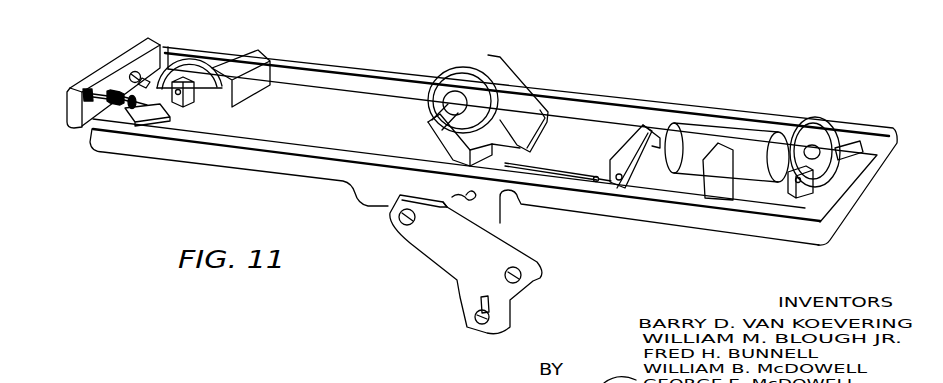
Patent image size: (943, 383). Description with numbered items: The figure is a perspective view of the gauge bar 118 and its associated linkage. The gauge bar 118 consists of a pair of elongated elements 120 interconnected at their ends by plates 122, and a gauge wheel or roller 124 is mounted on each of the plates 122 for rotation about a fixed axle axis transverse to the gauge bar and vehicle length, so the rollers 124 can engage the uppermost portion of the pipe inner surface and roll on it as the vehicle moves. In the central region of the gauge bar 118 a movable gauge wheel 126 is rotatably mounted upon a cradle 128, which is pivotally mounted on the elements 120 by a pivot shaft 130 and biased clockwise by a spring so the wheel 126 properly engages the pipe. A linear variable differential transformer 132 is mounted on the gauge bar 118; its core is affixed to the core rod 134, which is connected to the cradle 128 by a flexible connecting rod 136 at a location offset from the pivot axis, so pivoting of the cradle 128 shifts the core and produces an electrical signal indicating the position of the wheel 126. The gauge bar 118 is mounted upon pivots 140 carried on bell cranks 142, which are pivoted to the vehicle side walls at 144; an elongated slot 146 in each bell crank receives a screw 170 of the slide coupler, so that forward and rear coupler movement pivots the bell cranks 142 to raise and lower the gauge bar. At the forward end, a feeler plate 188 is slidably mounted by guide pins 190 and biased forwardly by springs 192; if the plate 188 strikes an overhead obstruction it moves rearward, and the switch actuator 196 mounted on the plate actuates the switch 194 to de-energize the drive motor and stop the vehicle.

The gauge bar 118 is at (493, 146).
The elongated elements 120 is at (312, 85).
The plates 122 is at (238, 72).
The gauge wheel or roller 124 is at (190, 60).
The movable gauge wheel 126 is at (455, 76).
The cradle 128 is at (508, 85).
The pivot shaft 130 is at (447, 193).
The linear variable differential transformer 132 is at (706, 136).
The core rod 134 is at (660, 135).
The flexible connecting rod 136 is at (548, 166).
The pivots 140 is at (402, 222).
The bell cranks 142 is at (480, 262).
The pivot 144 is at (540, 282).
The elongated slot 146 is at (478, 303).
The screws 170 is at (482, 326).
The feeler plate 188 is at (132, 52).
The guide pins 190 is at (139, 78).
The springs 192 is at (131, 73).
The switch 194 is at (157, 118).
The switch actuator 196 is at (124, 105).